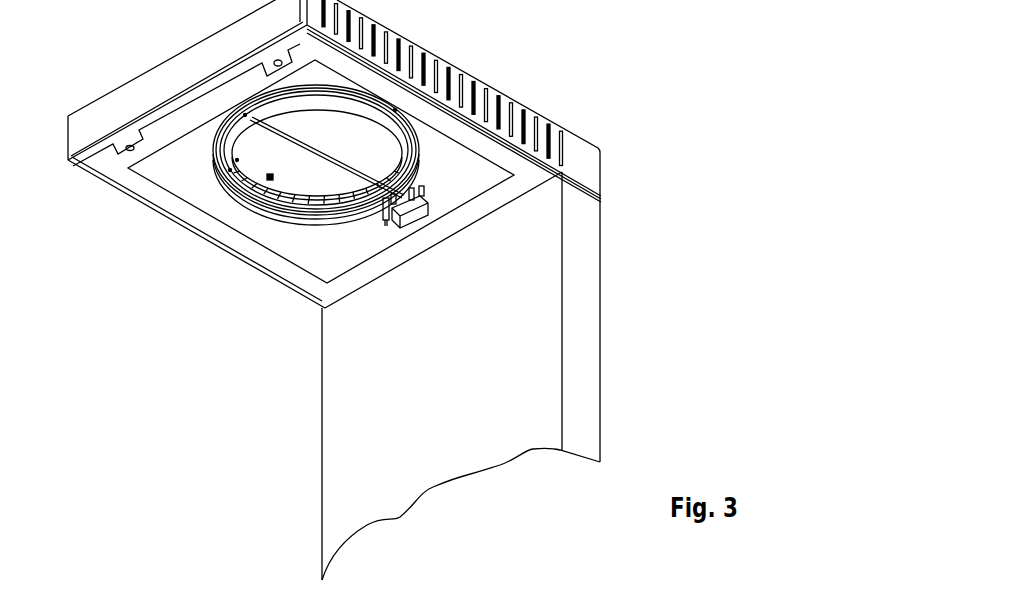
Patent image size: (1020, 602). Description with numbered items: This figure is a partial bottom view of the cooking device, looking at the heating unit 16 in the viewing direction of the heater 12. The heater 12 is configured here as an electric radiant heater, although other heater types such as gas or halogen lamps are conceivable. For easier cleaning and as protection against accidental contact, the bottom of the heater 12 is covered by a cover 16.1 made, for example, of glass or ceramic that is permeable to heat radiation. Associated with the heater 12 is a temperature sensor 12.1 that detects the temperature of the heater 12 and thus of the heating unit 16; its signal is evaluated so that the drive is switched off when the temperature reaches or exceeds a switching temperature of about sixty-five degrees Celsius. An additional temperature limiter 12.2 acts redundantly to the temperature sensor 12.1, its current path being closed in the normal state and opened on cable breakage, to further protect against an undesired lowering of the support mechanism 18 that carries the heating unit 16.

The heater 12 is at (456, 195).
The temperature sensor 12.1 is at (272, 177).
The temperature limiter 12.2 is at (417, 150).
The heating unit 16 is at (483, 107).
The cover 16.1 is at (345, 238).
The support mechanism 18 is at (582, 320).